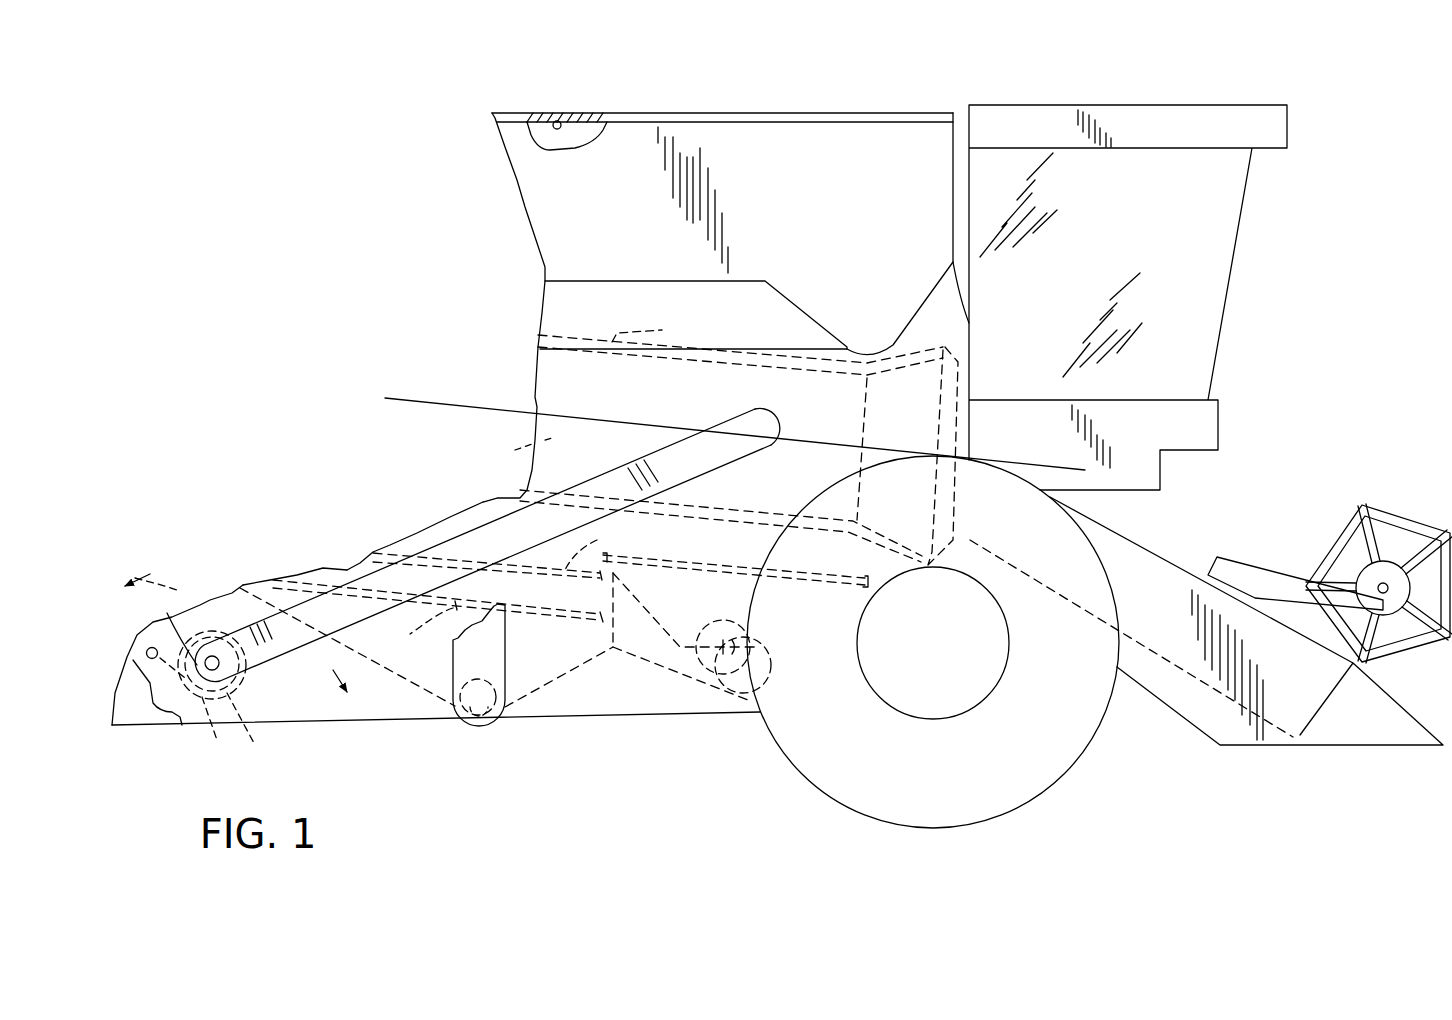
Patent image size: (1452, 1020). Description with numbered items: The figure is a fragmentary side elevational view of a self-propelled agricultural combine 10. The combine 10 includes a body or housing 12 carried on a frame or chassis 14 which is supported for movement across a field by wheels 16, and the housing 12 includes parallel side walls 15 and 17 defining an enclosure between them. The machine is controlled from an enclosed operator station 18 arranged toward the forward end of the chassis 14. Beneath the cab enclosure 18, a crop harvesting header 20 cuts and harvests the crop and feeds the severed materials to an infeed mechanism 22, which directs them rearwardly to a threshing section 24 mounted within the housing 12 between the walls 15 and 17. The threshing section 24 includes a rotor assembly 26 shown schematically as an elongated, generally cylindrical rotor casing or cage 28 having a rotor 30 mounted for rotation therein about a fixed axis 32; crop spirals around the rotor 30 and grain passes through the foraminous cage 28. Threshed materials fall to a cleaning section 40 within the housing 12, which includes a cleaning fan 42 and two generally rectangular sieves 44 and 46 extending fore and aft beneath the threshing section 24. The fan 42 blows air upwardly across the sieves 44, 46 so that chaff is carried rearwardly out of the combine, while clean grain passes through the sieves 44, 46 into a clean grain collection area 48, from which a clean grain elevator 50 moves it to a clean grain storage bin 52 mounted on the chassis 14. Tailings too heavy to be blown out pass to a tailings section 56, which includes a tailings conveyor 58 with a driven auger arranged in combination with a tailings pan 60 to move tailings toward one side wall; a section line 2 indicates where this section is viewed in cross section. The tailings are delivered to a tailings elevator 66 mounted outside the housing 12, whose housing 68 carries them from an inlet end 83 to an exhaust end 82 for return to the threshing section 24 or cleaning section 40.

The section line 2- 2 is at (232, 644).
The combine 10 is at (478, 217).
The housing 12 is at (446, 532).
The chassis 14 is at (345, 725).
The side wall 15 is at (190, 725).
The wheels 16 is at (1040, 776).
The side wall 17 is at (148, 725).
The operator station 18 is at (1170, 314).
The header 20 is at (1415, 495).
The infeed mechanism 22 is at (1183, 540).
The threshing section 24 is at (853, 356).
The rotor assembly 26 is at (616, 332).
The rotor casing 28 is at (668, 328).
The rotor 30 is at (517, 450).
The fixed axis 32 is at (437, 398).
The cleaning section 40 is at (345, 572).
The cleaning fan 42 is at (760, 678).
The cleaning sieve 44 is at (735, 556).
The cleaning sieve 46 is at (487, 595).
The clean grain collection area 48 is at (490, 726).
The clean grain elevator 50 is at (520, 650).
The clean grain storage bin 52 is at (558, 120).
The tailings section 56 is at (203, 628).
The tailings conveyor 58 is at (255, 727).
The tailings pan 60 is at (216, 732).
The tailings elevator 66 is at (618, 446).
The housing 68 is at (690, 472).
The exhaust end 82 is at (780, 428).
The inlet end 83 is at (167, 628).